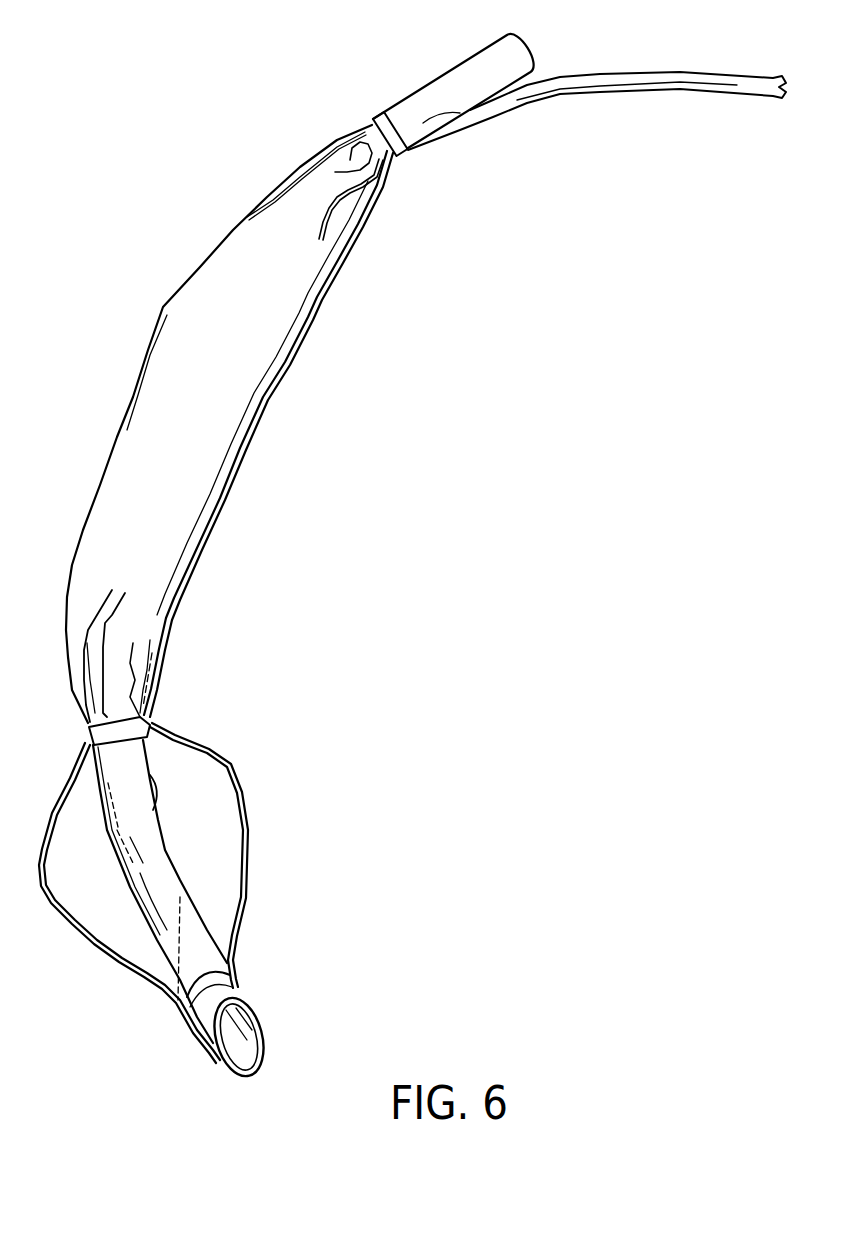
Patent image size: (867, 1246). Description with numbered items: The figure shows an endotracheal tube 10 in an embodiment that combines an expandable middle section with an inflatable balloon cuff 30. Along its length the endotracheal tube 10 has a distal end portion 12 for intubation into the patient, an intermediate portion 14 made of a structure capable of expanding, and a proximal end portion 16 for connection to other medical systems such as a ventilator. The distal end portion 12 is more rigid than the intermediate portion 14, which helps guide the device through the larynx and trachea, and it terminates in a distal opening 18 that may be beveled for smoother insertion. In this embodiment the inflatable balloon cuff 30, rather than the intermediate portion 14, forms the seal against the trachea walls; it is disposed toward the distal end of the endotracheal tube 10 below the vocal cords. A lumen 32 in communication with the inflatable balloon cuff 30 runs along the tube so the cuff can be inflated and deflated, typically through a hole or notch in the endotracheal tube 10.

The endotracheal tube 10 is at (303, 37).
The distal end portion 12 is at (210, 1033).
The intermediate portion 14 is at (133, 400).
The proximal end portion 16 is at (463, 57).
The distal opening 18 is at (263, 1047).
The inflatable balloon cuff 30 is at (230, 773).
The lumen 32 is at (683, 73).